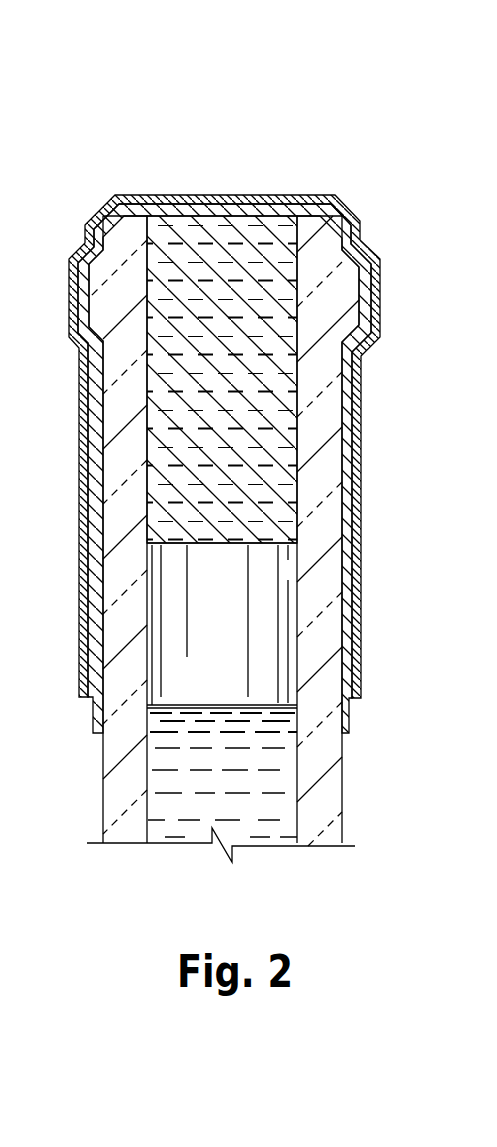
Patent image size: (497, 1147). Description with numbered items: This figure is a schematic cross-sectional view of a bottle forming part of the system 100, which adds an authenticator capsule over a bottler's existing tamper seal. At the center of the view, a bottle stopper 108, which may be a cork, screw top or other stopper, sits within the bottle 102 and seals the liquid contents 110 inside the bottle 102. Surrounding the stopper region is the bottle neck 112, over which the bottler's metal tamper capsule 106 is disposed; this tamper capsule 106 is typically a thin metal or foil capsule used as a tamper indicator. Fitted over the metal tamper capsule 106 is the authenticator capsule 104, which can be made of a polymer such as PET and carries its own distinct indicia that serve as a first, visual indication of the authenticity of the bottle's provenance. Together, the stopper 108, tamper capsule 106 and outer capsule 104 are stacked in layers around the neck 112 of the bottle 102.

The system 100 is at (355, 129).
The bottle 102 is at (76, 788).
The capsule 104 is at (95, 210).
The tamper capsule 106 is at (208, 207).
The bottle stopper 108 is at (255, 250).
The liquid contents 110 is at (262, 805).
The bottle neck 112 is at (330, 788).